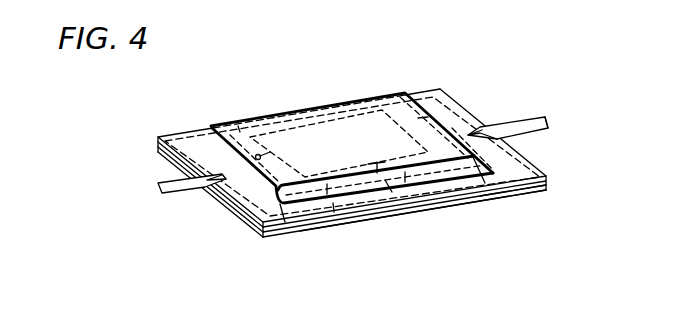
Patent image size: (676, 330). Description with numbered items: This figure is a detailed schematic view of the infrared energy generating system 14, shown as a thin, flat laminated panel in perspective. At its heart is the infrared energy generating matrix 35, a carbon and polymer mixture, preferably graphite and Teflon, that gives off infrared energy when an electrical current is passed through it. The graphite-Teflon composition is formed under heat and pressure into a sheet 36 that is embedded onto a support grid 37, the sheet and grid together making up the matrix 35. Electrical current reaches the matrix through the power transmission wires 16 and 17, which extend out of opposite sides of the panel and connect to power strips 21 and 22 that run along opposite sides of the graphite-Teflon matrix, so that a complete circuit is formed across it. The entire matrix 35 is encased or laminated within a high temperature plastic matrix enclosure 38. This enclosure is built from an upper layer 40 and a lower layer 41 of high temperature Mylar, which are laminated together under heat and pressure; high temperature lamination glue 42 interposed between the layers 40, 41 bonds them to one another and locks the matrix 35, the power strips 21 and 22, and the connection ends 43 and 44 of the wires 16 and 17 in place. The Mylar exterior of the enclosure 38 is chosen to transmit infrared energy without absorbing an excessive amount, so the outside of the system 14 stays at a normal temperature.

The infrared energy generating system 14 is at (352, 159).
The power transmission wire 16 is at (173, 194).
The power transmission wire 17 is at (520, 121).
The power strip 21 is at (236, 124).
The power strip 22 is at (502, 204).
The infrared energy generating matrix 35 is at (287, 227).
The sheet 36 is at (420, 216).
The support grid 37 is at (343, 227).
The matrix enclosure 38 is at (440, 106).
The upper layer 40 is at (228, 210).
The lower layer 41 is at (248, 228).
The lamination glue 42 is at (457, 198).
The connection end 43 is at (212, 156).
The connection end 44 is at (456, 122).